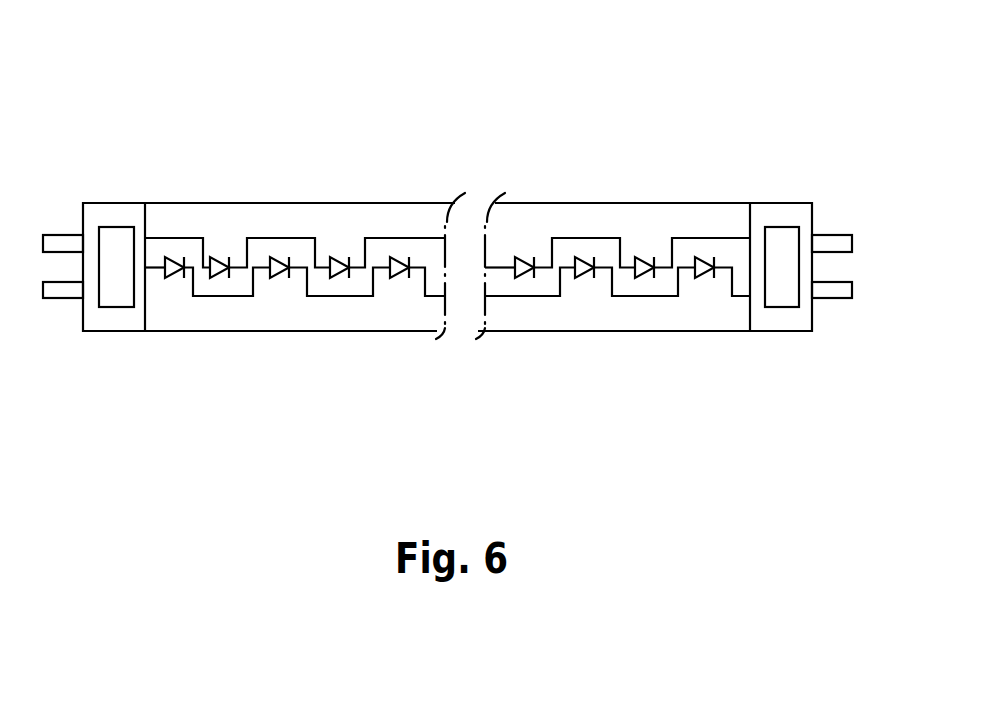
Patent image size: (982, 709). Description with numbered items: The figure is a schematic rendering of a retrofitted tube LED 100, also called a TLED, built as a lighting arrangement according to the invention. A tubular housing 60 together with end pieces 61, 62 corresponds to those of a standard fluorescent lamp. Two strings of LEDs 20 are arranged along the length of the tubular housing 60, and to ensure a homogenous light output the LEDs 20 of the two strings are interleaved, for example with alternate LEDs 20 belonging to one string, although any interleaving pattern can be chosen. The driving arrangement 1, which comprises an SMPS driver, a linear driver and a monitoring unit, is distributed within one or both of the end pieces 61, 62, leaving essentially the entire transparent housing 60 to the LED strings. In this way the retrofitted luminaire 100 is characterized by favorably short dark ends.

The retrofitted tube LED 100 is at (613, 106).
The tubular housing 60 is at (225, 332).
The end piece 61 is at (113, 203).
The end piece 62 is at (783, 203).
The driving arrangement 1 is at (120, 290).
The LED 20 is at (220, 257).